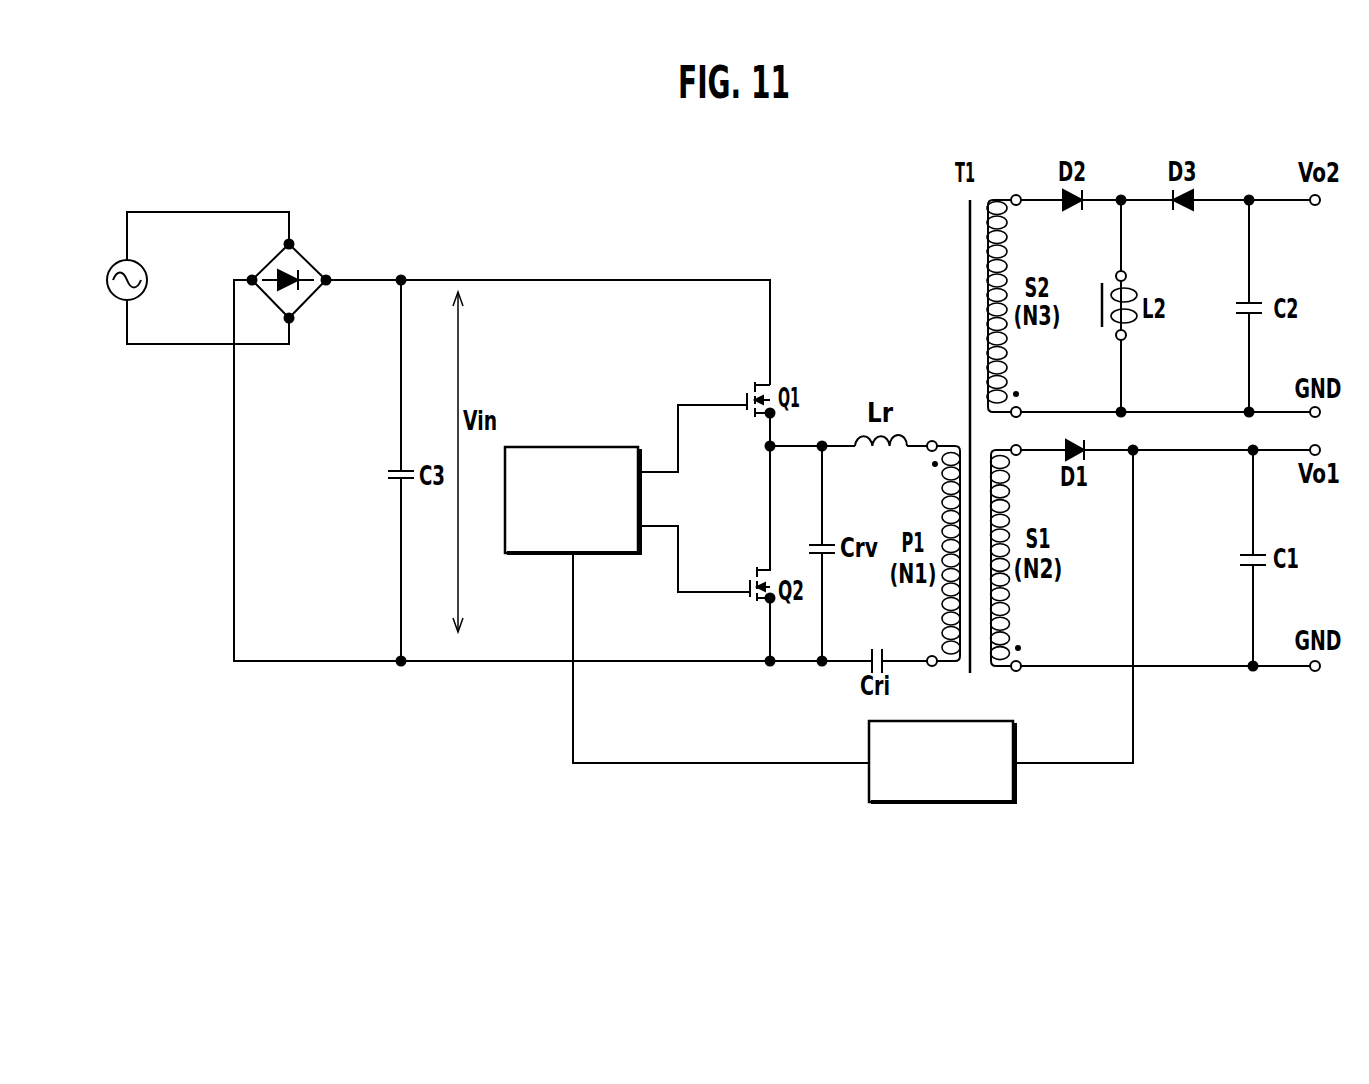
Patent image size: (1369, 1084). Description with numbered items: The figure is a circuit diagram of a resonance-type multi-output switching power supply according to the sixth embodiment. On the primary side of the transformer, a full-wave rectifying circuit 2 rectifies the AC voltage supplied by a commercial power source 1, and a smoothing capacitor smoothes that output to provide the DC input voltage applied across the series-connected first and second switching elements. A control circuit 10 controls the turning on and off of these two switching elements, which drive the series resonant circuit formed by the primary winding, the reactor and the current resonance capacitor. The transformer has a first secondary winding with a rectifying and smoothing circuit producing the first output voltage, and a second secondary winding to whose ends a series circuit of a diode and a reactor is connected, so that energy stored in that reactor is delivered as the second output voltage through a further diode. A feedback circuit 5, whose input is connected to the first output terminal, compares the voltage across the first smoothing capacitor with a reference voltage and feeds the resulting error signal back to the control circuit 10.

The commercial power source 1 is at (103, 283).
The full-wave rectifying circuit 2 is at (307, 257).
The control circuit 10 is at (565, 447).
The feedback circuit 5 is at (1013, 778).